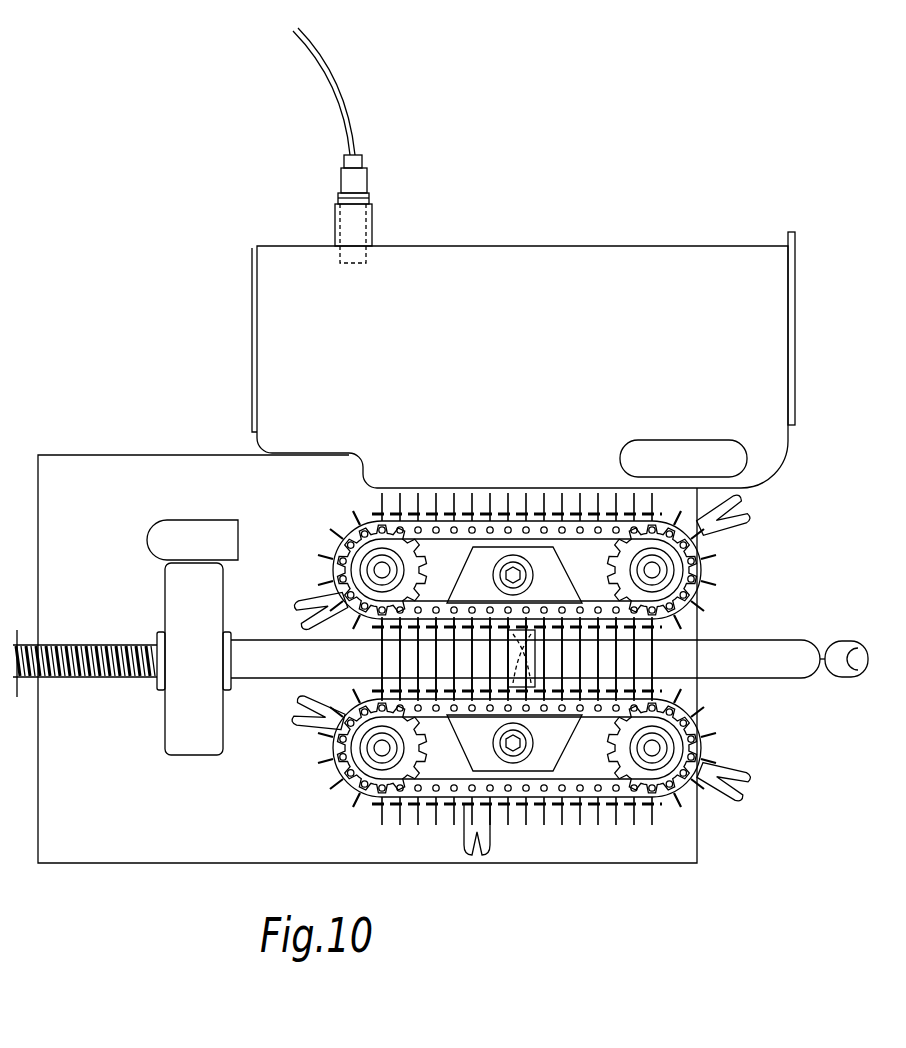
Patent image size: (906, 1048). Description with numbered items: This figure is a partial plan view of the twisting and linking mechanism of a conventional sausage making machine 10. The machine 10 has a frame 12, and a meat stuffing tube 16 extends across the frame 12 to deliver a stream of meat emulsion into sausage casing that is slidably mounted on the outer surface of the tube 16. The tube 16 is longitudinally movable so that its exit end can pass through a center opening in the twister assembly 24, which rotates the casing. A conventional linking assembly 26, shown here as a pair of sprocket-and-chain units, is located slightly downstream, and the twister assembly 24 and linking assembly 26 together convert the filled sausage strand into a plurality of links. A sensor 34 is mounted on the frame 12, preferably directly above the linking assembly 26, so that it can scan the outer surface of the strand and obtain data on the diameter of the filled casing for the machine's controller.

The sausage making machine 10 is at (210, 228).
The frame 12 is at (148, 506).
The meat stuffing tube 16 is at (103, 647).
The twister assembly 24 is at (165, 589).
The linking assembly 26 is at (715, 812).
The sensor 34 is at (373, 227).